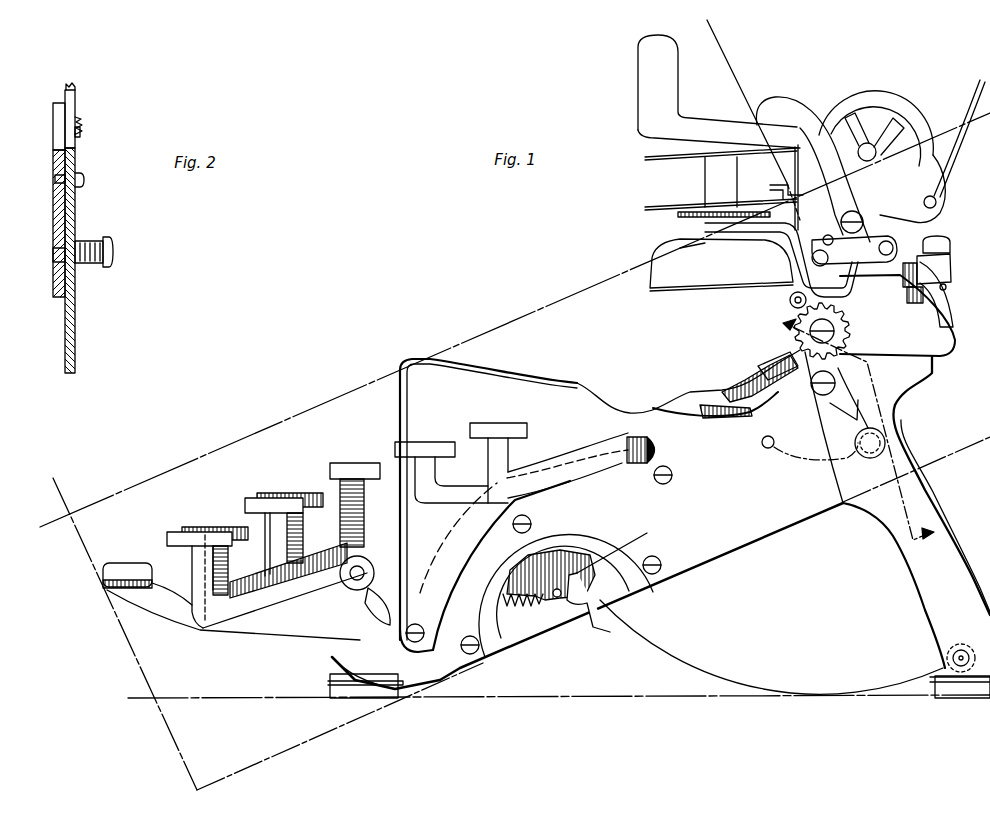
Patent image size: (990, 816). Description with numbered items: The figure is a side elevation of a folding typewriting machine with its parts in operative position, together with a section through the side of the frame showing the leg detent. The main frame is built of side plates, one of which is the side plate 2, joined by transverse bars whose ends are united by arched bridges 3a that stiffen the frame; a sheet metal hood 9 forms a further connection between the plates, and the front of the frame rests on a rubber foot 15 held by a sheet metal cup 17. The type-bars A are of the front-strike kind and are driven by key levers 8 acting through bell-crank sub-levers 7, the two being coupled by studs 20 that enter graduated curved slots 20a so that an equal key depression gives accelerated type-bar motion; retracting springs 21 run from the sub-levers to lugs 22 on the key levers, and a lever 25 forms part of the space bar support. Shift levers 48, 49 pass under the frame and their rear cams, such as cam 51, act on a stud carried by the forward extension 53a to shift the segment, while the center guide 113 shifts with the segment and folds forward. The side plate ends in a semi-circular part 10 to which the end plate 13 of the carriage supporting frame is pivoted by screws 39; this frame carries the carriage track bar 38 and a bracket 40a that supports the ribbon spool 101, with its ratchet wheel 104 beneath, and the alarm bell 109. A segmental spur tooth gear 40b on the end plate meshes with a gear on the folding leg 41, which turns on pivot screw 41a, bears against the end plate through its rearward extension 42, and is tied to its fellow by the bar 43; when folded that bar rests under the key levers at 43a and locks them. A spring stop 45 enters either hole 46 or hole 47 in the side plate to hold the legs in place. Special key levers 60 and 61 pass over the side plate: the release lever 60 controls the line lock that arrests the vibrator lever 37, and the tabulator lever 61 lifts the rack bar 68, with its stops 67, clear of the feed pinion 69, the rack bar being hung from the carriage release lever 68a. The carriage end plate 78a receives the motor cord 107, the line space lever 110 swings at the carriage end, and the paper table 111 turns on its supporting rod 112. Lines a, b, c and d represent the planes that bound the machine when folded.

In FIG. 2, the side plate 2 is at (55, 288).
In FIG. 1, the side plate 2 is at (559, 508).
In FIG. 1, the arched bridge 3a is at (505, 645).
In FIG. 1, the sub-lever 7 is at (352, 612).
In FIG. 1, the key lever 8 is at (310, 573).
In FIG. 1, the sheet metal hood 9 is at (600, 501).
In FIG. 1, the semi-circular part 10 is at (796, 350).
In FIG. 2, the end plate 13 is at (78, 94).
In FIG. 1, the end plate 13 is at (897, 315).
In FIG. 1, the rubber foot 15 is at (330, 686).
In FIG. 1, the sheet metal cup 17 is at (362, 676).
In FIG. 1, the stud 20 is at (358, 566).
In FIG. 1, the curved slot 20a is at (345, 596).
In FIG. 1, the retracting spring 21 is at (535, 604).
In FIG. 1, the lug 22 is at (128, 565).
In FIG. 1, the lever 25 is at (298, 620).
In FIG. 1, the vibrator lever 37 is at (950, 306).
In FIG. 1, the carriage track bar 38 is at (860, 235).
In FIG. 2, the screw 39 is at (81, 135).
In FIG. 1, the screw 39 is at (836, 326).
In FIG. 1, the bracket 40a is at (790, 245).
In FIG. 2, the segmental spur tooth gear 40b is at (83, 122).
In FIG. 1, the segmental spur tooth gear 40b is at (790, 300).
In FIG. 2, the folding leg 41 is at (72, 322).
In FIG. 1, the folding leg 41 is at (862, 400).
In FIG. 2, the pivot screw 41a is at (85, 181).
In FIG. 1, the pivot screw 41a is at (822, 396).
In FIG. 1, the rearward extension 42 is at (913, 380).
In FIG. 1, the bar 43 is at (952, 657).
In FIG. 1, the locking position under key levers 43a is at (630, 546).
In FIG. 2, the spring stop 45 is at (95, 241).
In FIG. 1, the spring stop 45 is at (858, 456).
In FIG. 2, the hole 46 is at (53, 256).
In FIG. 1, the hole 46 is at (905, 432).
In FIG. 1, the hole 47 is at (807, 454).
In FIG. 1, the shift lever 48 is at (287, 497).
In FIG. 1, the shift lever 49 is at (212, 528).
In FIG. 1, the cam 51 is at (757, 362).
In FIG. 1, the forward extension 53a is at (730, 386).
In FIG. 1, the release key lever 60 is at (452, 492).
In FIG. 1, the tabulator key lever 61 is at (612, 452).
In FIG. 1, the stop 67 is at (945, 245).
In FIG. 1, the rack bar 68 is at (952, 268).
In FIG. 1, the carriage release lever 68a is at (805, 102).
In FIG. 1, the feed pinion 69 is at (860, 264).
In FIG. 1, the carriage end plate 78a is at (882, 157).
In FIG. 1, the ribbon spool 101 is at (721, 187).
In FIG. 1, the ratchet wheel 104 is at (690, 216).
In FIG. 1, the cord 107 is at (852, 213).
In FIG. 1, the alarm bell 109 is at (721, 265).
In FIG. 1, the line space lever 110 is at (666, 84).
In FIG. 1, the paper table 111 is at (955, 153).
In FIG. 1, the supporting rod 112 is at (937, 201).
In FIG. 1, the center guide 113 is at (771, 185).
In FIG. 1, the type-bars A is at (715, 416).
In FIG. 1, the boundary line a is at (515, 320).
In FIG. 1, the boundary line b is at (753, 120).
In FIG. 1, the boundary line c is at (593, 613).
In FIG. 1, the boundary line d is at (146, 634).